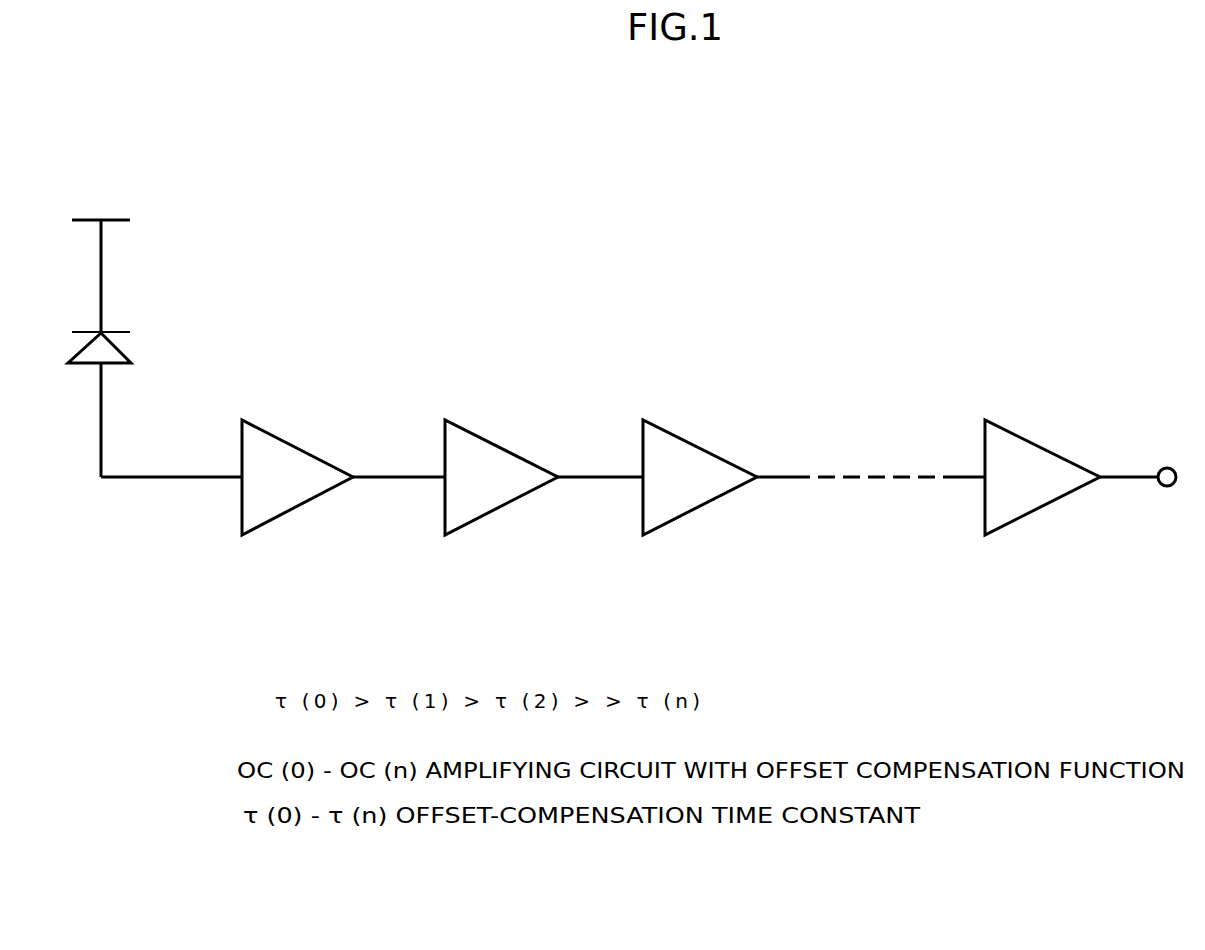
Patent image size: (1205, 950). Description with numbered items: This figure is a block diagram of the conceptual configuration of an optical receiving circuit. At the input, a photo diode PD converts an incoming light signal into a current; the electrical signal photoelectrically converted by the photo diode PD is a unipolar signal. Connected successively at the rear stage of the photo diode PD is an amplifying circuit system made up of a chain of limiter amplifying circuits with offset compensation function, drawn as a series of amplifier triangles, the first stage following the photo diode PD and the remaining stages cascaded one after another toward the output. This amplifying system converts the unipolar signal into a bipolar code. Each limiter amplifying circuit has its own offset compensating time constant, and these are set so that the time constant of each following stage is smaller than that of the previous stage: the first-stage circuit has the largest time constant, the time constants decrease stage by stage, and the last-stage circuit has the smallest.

The photo diode PD is at (150, 343).